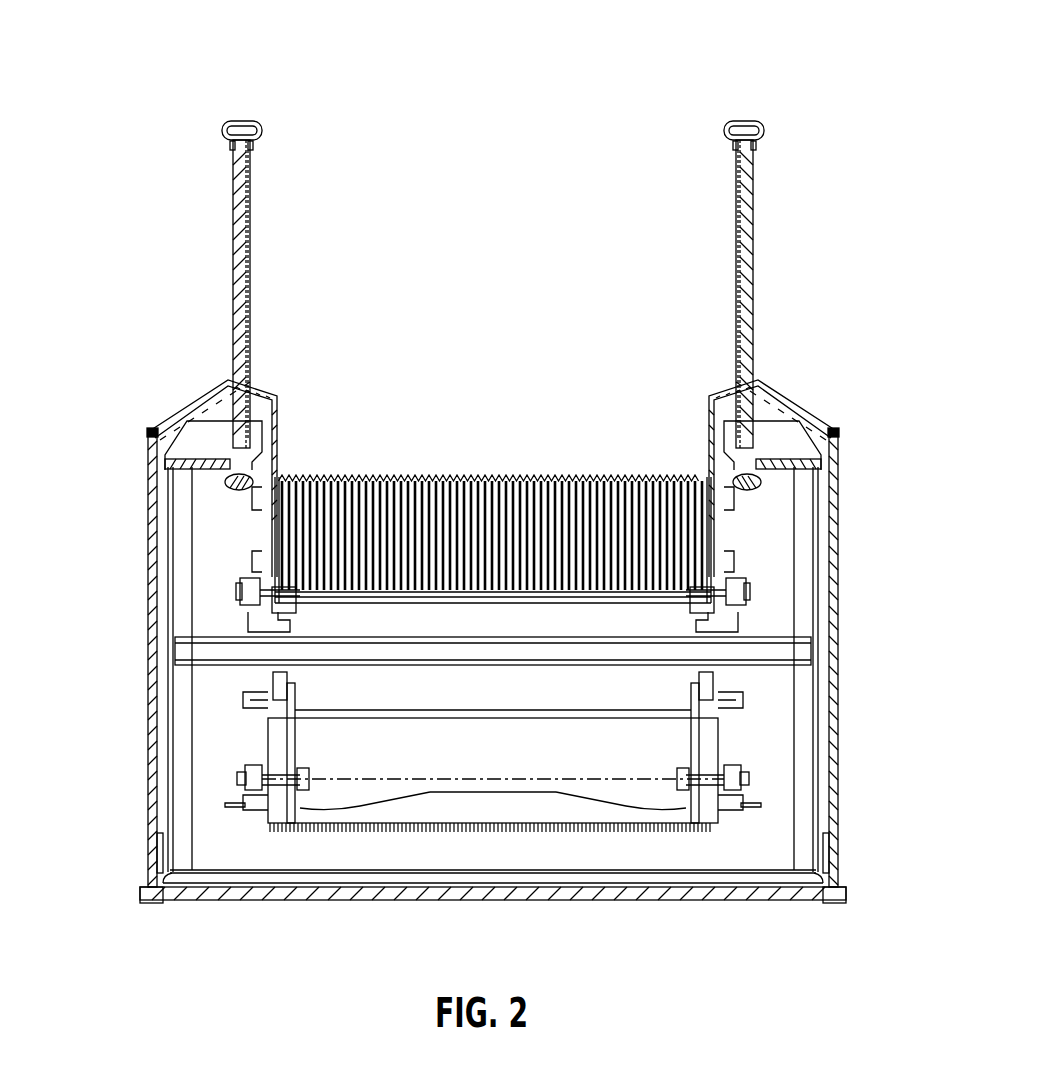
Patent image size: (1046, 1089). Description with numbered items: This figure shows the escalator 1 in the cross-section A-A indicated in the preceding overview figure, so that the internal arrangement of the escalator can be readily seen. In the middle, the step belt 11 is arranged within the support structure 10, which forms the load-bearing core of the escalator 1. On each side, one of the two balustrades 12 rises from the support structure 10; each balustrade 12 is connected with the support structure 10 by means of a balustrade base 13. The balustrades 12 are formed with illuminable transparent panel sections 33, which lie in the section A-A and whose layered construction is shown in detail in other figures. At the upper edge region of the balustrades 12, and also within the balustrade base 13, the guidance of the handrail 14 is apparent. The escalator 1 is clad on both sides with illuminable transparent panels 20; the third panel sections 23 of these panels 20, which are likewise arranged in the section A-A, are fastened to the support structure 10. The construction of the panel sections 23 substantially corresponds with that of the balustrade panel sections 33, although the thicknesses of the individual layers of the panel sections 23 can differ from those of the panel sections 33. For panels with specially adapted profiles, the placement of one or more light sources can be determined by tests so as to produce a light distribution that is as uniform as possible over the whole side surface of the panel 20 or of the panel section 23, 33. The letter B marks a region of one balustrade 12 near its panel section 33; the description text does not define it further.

The escalator 1 is at (537, 52).
The support structure 10 is at (795, 651).
The step belt 11 is at (627, 515).
The balustrade 12 is at (212, 178).
The balustrade base 13 is at (184, 398).
The handrail 14 is at (240, 121).
The illuminable transparent panel 20 is at (142, 813).
The third panel section 23 is at (148, 640).
The illuminable transparent panel section 33 is at (235, 305).
The bending portion B is at (222, 262).